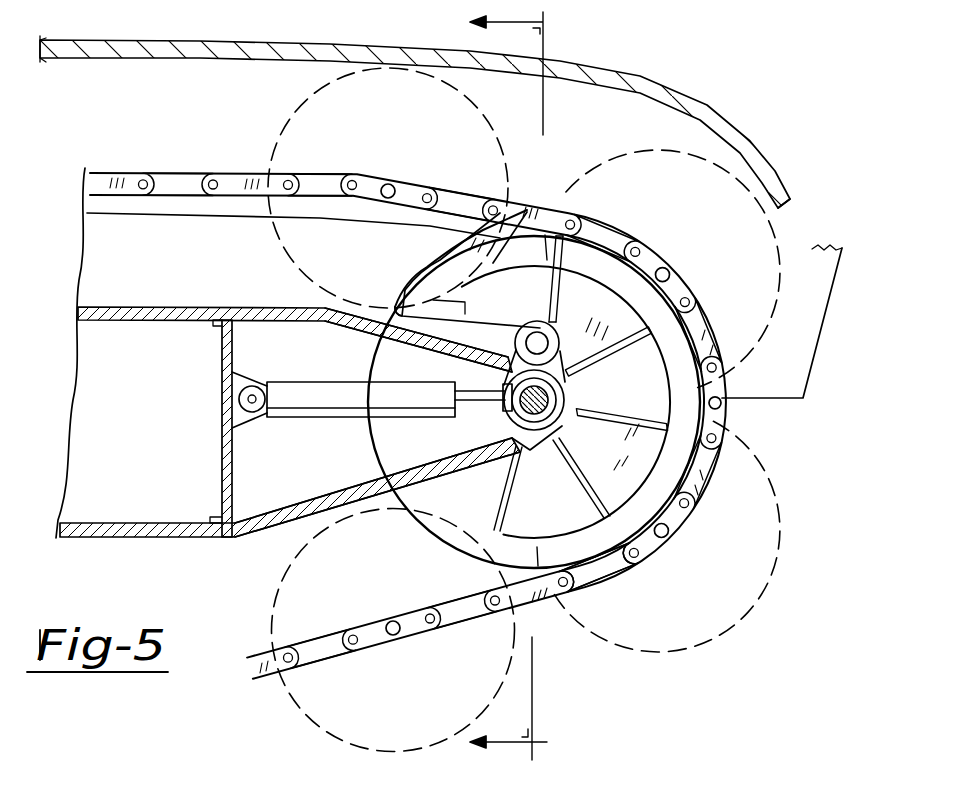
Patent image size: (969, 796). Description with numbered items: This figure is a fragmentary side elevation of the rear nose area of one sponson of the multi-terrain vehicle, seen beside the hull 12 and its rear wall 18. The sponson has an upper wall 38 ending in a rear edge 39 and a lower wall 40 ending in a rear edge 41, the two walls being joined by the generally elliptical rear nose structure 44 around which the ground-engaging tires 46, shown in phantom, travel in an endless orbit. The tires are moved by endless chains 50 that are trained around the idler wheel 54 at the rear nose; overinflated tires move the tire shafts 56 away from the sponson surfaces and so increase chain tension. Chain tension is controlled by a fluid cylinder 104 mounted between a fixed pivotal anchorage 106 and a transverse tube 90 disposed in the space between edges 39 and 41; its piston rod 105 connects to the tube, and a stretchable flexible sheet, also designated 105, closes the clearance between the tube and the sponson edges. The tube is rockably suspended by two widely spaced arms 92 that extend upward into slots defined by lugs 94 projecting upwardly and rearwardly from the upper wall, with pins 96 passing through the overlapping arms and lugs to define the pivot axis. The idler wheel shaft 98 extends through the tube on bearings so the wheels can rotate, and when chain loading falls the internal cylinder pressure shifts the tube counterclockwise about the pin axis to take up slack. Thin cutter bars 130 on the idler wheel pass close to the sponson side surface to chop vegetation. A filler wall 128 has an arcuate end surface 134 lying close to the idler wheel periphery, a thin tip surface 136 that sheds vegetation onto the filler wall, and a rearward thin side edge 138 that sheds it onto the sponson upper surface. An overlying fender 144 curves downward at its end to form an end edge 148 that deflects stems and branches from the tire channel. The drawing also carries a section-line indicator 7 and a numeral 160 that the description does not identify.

The section line 7- 7 is at (485, 394).
The hull 12 is at (826, 343).
The rear wall 18 is at (840, 293).
The upper wall 38 is at (165, 308).
The rear edge 39 is at (512, 368).
The lower wall 40 is at (162, 540).
The rear edge 41 is at (475, 450).
The rear nose structure 44 is at (580, 420).
The ground-engaging tires 46 is at (745, 180).
The endless chains 50 is at (187, 178).
The idler wheels 54 is at (592, 568).
The shafts 56 is at (398, 185).
The transverse tube 90 is at (512, 445).
The arms 92 is at (563, 353).
The lugs 94 is at (560, 330).
The pins 96 is at (532, 331).
The shaft 98 is at (600, 375).
The fluid cylinder 104 is at (303, 418).
The piston rod 105 is at (455, 416).
The fixed pivotal anchorage 106 is at (245, 401).
The filler wall 128 is at (235, 250).
The cutter bars 130 is at (612, 240).
The arcuate end surface 134 is at (437, 262).
The thin tip surface 136 is at (495, 262).
The thin side edge 138 is at (410, 300).
The fender 144 is at (603, 68).
The end edges 148 is at (795, 205).
The end wall 160 is at (235, 467).